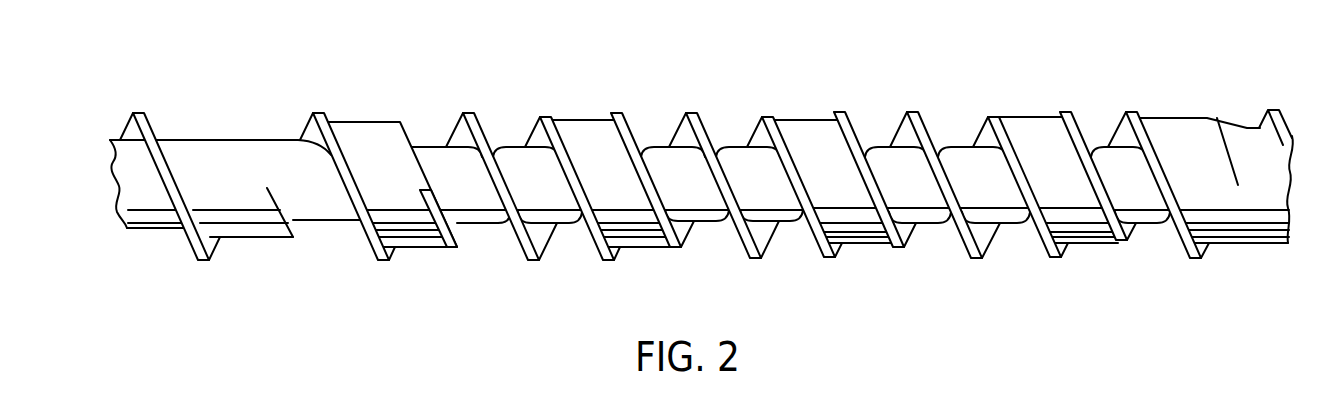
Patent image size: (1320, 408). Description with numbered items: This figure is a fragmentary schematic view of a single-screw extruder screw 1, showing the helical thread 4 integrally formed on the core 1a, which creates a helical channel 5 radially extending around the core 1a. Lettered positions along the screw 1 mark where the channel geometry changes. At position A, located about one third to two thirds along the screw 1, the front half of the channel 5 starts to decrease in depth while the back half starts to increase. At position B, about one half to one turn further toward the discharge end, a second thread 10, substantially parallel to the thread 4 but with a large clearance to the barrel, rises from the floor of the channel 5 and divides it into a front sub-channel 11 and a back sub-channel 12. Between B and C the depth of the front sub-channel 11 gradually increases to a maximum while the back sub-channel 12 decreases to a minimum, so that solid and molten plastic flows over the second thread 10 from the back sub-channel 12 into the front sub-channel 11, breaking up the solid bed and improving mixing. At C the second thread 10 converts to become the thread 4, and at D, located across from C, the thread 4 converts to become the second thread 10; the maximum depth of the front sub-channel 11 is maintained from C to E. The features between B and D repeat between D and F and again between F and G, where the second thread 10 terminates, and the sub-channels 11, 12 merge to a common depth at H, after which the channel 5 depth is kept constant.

The screw 1 is at (338, 237).
The core 1a is at (157, 228).
The helical thread 4 is at (616, 113).
The helical channel 5 is at (186, 110).
The second thread 10 is at (545, 117).
The front sub-channel 11 is at (508, 130).
The back sub-channel 12 is at (545, 120).
The position A is at (267, 207).
The position B is at (417, 210).
The position C is at (577, 192).
The position D is at (660, 200).
The position E is at (724, 197).
The position F is at (868, 183).
The position G is at (1100, 187).
The position H is at (1233, 173).